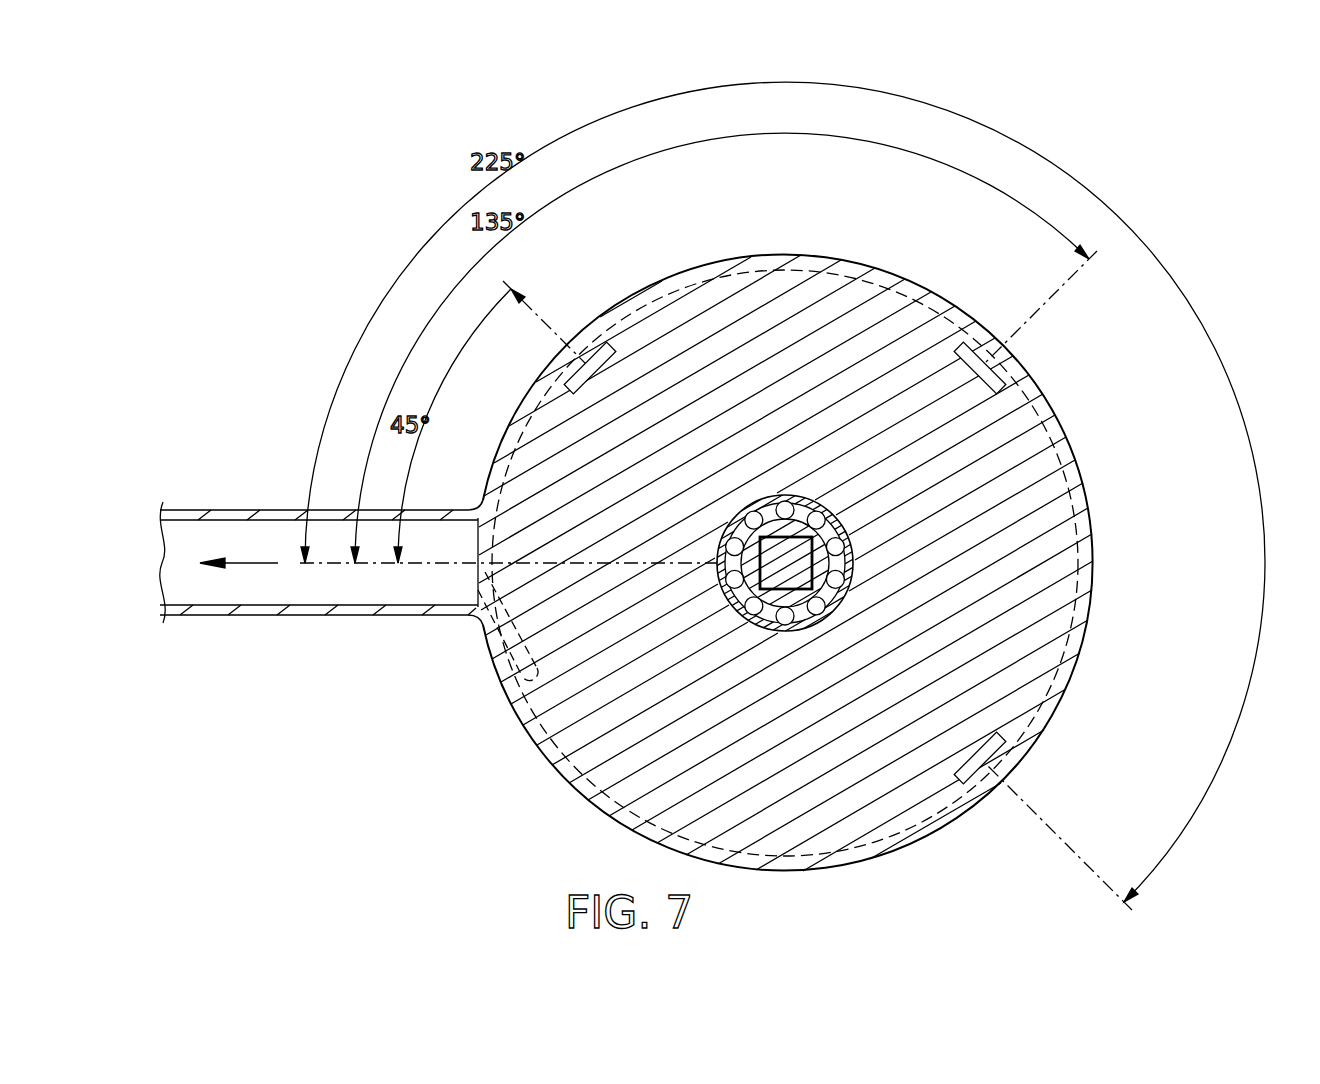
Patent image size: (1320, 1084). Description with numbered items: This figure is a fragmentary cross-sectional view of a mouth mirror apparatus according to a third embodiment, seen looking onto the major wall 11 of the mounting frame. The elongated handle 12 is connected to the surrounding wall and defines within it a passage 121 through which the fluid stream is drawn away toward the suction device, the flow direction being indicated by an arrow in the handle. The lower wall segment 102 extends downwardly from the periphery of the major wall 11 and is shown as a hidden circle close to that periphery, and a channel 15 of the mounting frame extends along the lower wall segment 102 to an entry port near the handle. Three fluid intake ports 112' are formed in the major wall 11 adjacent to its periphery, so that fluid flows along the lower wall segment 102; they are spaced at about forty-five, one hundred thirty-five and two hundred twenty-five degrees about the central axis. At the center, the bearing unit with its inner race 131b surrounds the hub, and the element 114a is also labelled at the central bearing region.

The major wall 11 is at (615, 765).
The elongated handle 12 is at (243, 510).
The passage 121 is at (312, 585).
The inner race 131b is at (478, 583).
The channel 15 is at (500, 648).
The lower wall segment 102 is at (545, 745).
The fluid intake ports 112' is at (835, 579).
The bearing 114a is at (822, 612).